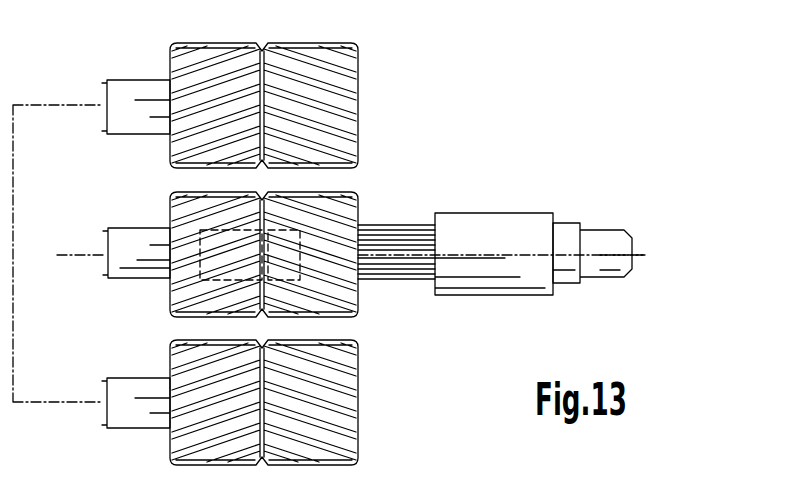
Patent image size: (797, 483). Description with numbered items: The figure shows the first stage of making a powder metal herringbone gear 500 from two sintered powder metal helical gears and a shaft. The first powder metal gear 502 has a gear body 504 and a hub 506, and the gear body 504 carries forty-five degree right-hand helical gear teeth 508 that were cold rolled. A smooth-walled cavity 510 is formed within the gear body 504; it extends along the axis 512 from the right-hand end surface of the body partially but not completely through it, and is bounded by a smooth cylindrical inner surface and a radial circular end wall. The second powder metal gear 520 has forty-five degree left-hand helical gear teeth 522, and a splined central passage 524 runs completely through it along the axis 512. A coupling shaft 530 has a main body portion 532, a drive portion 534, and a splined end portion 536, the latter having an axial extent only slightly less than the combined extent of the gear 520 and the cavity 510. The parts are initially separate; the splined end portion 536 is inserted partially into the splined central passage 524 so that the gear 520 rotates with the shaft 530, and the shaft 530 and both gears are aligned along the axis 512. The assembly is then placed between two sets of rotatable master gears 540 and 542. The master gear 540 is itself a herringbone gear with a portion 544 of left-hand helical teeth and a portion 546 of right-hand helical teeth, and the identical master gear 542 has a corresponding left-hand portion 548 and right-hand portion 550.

The herringbone gear 500 is at (492, 138).
The first powder metal gear 502 is at (92, 240).
The gear body 504 is at (170, 290).
The hub 506 is at (128, 228).
The right-hand helical gear teeth 508 is at (170, 318).
The smooth-walled cavity 510 is at (190, 195).
The axis 512 is at (684, 250).
The second powder metal gear 520 is at (368, 324).
The left-hand helical gear teeth 522 is at (355, 195).
The splined central passage 524 is at (358, 212).
The coupling shaft 530 is at (549, 203).
The main body portion 532 is at (475, 296).
The drive portion 534 is at (600, 278).
The splined end portion 536 is at (400, 285).
The master gear 540 is at (368, 50).
The master gear 542 is at (368, 398).
The portion 544 is at (215, 43).
The portion 546 is at (305, 43).
The portion 548 is at (170, 452).
The portion 550 is at (360, 452).